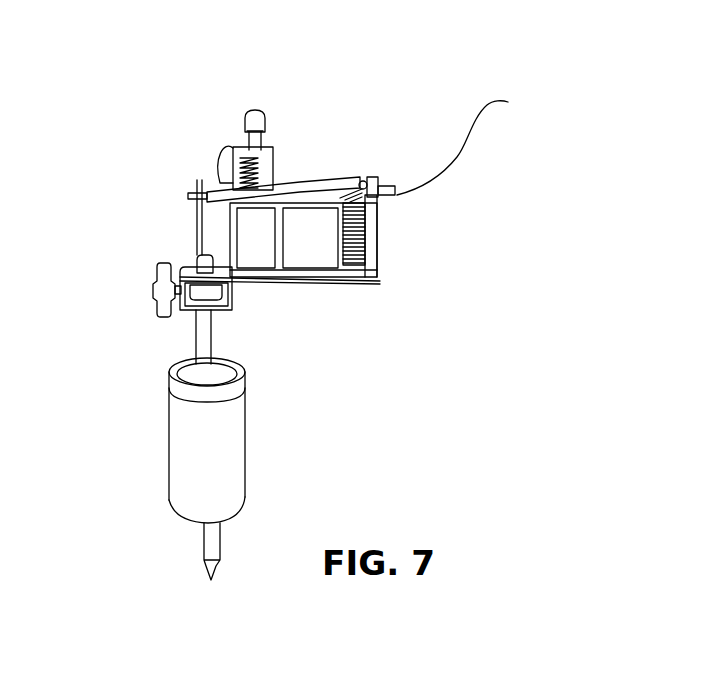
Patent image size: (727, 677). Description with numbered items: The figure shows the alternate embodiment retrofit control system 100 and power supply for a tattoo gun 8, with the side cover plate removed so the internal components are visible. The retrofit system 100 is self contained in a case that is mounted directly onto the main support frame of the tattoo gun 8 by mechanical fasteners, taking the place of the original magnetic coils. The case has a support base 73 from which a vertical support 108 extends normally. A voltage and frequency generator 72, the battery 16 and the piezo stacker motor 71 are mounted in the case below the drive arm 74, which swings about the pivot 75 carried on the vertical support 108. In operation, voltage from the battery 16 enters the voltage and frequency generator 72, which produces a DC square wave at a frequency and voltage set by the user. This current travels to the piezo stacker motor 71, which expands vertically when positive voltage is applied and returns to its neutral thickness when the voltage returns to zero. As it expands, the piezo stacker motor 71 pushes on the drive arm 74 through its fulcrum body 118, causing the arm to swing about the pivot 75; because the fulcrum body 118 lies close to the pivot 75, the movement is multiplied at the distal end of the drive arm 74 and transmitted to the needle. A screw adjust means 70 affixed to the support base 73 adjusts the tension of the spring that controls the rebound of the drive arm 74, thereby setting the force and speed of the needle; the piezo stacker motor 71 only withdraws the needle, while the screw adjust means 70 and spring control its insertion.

The retrofit control system 100 is at (147, 95).
The screw adjust means 70 is at (260, 108).
The support base 73 is at (280, 148).
The drive arm 74 is at (315, 178).
The pivot 75 is at (362, 175).
The fulcrum body 118 is at (483, 140).
The piezo stacker motor 71 is at (375, 270).
The battery 16 is at (254, 248).
The voltage and frequency generator 72 is at (310, 240).
The vertical support 108 is at (378, 227).
The tattoo gun 8 is at (176, 263).